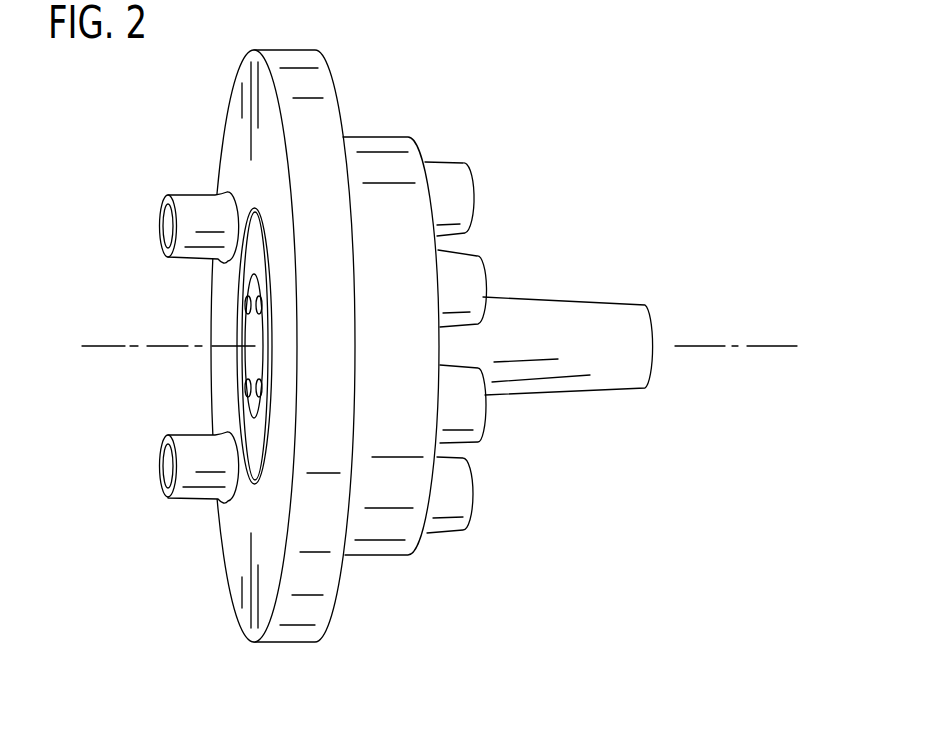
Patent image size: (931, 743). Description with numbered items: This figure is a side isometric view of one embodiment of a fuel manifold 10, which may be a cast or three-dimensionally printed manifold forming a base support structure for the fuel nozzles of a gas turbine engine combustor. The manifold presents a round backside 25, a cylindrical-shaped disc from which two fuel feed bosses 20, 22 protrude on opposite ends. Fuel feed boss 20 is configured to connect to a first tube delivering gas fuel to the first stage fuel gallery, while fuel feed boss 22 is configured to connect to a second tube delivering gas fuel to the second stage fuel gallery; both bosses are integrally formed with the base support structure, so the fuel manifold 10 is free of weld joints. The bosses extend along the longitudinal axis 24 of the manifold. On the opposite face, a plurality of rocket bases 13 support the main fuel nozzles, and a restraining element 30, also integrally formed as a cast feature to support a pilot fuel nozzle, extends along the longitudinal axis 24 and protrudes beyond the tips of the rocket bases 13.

The fuel manifold 10 is at (431, 346).
The rocket bases 13 is at (458, 193).
The fuel feed boss 20 is at (192, 205).
The fuel feed boss 22 is at (192, 445).
The longitudinal axis 24 is at (110, 347).
The round backside 25 is at (213, 582).
The restraining element 30 is at (594, 368).